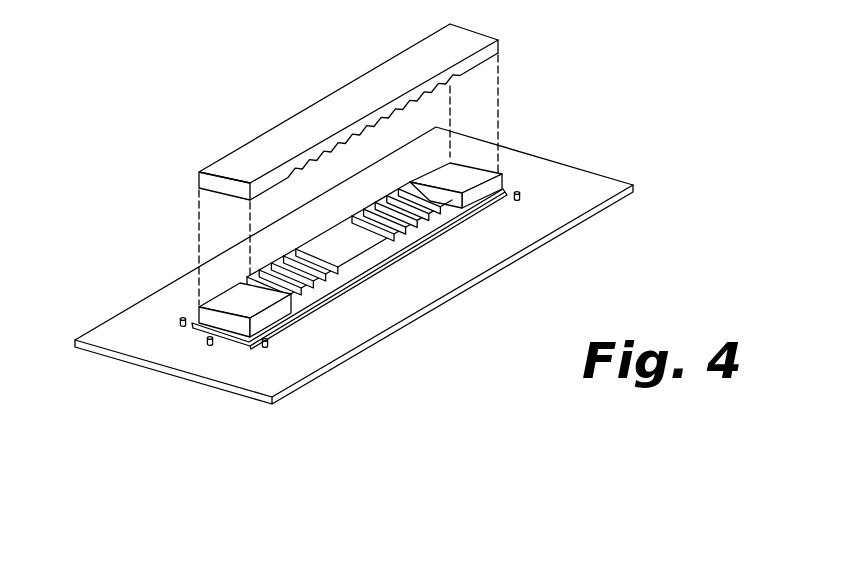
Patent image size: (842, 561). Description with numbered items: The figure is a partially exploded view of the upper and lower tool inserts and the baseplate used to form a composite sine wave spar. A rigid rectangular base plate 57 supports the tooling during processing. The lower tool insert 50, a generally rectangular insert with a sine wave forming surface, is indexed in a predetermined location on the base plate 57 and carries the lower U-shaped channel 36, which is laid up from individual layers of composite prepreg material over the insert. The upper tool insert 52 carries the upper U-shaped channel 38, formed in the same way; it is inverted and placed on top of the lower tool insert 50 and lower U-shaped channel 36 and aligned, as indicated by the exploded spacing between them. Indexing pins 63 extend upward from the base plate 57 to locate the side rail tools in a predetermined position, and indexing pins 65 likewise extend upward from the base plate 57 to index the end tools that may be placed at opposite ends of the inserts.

The lower U-shaped channel 36 is at (462, 180).
The upper U-shaped channel 38 is at (503, 52).
The lower tool insert 50 is at (201, 326).
The upper tool insert 52 is at (397, 101).
The base plate 57 is at (588, 189).
The indexing pins 63 is at (269, 344).
The indexing pins 65 is at (210, 346).